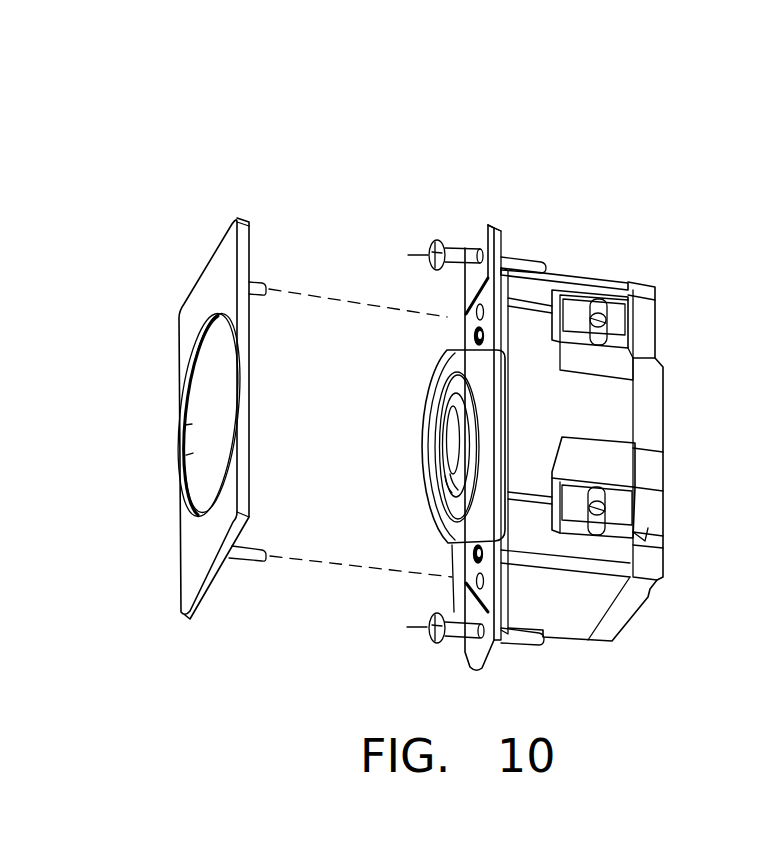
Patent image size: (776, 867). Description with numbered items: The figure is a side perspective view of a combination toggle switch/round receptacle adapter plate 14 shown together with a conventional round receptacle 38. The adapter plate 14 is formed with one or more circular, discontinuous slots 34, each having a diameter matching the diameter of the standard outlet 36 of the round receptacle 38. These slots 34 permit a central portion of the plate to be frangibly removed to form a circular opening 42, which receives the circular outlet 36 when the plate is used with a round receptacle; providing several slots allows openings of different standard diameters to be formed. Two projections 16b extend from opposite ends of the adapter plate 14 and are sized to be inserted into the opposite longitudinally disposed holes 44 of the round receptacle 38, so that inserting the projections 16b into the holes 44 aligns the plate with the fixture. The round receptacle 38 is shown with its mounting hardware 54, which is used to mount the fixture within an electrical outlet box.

The combination toggle switch/round receptacle adapter plate 14 is at (200, 292).
The projections 16b is at (261, 282).
The circular discontinuous slots 34 is at (192, 500).
The outlet 36 is at (487, 374).
The round receptacle 38 is at (640, 383).
The circular opening 42 is at (217, 417).
The holes 44 is at (477, 315).
The mounting hardware 54 is at (462, 248).